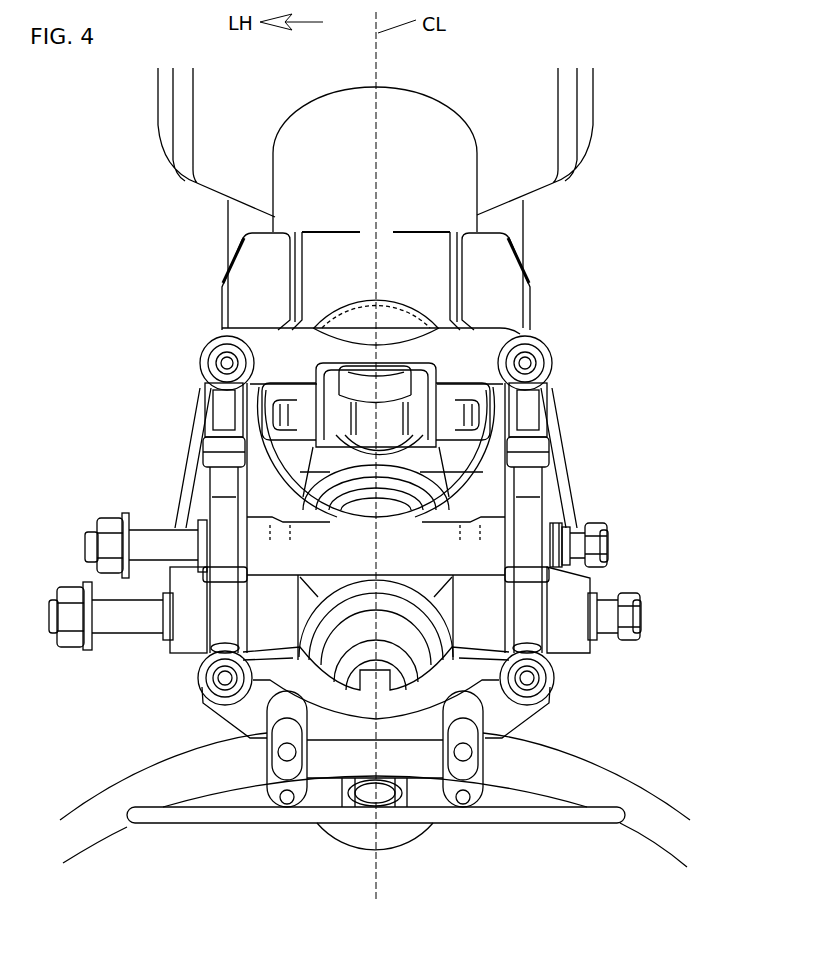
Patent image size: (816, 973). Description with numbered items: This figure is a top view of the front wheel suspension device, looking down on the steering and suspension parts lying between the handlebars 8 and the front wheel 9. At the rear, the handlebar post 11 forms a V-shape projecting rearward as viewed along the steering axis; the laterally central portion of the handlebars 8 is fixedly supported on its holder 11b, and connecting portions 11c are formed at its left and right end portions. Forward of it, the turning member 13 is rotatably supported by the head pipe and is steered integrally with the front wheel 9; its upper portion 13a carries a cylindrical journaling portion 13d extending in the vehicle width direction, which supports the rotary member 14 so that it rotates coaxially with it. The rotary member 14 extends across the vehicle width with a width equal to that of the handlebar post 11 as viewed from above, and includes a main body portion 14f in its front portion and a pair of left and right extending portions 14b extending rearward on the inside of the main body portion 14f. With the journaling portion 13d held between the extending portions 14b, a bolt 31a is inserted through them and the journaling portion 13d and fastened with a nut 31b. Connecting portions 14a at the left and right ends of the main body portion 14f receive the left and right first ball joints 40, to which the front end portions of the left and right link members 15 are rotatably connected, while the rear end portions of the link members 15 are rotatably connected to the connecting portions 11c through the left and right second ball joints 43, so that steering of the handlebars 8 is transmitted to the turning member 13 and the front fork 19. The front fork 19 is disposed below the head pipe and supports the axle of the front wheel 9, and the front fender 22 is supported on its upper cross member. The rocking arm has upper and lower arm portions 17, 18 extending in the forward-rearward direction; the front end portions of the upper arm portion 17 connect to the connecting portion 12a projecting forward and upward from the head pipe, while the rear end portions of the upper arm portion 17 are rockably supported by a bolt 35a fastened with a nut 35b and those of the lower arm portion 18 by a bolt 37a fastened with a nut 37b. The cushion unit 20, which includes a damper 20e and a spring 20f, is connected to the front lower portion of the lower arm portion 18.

The handlebars 8 is at (580, 767).
The front wheel 9 is at (513, 227).
The handlebar post 11 is at (548, 712).
The holder 11b is at (500, 730).
The connecting portions 11c is at (553, 660).
The connecting portion 12a is at (327, 233).
The turning member 13 is at (354, 370).
The upper portion 13a is at (290, 483).
The journaling portion 13d is at (278, 452).
The rotary member 14 is at (497, 324).
The connecting portions 14a is at (535, 340).
The extending portions 14b is at (470, 445).
The main body portion 14f is at (430, 318).
The link members 15 is at (220, 512).
The upper arm portion 17 is at (237, 308).
The lower arm portion 18 is at (163, 588).
The front fork 19 is at (457, 184).
The cushion unit 20 is at (627, 442).
The damper 20e is at (500, 498).
The spring 20f is at (482, 462).
The front fender 22 is at (537, 135).
The bolt 31a is at (470, 420).
The nut 31b is at (282, 440).
The bolt 35a is at (605, 540).
The nut 35b is at (103, 518).
The bolt 37a is at (641, 615).
The nut 37b is at (72, 645).
The first ball joints 40 is at (195, 358).
The second ball joints 43 is at (552, 627).